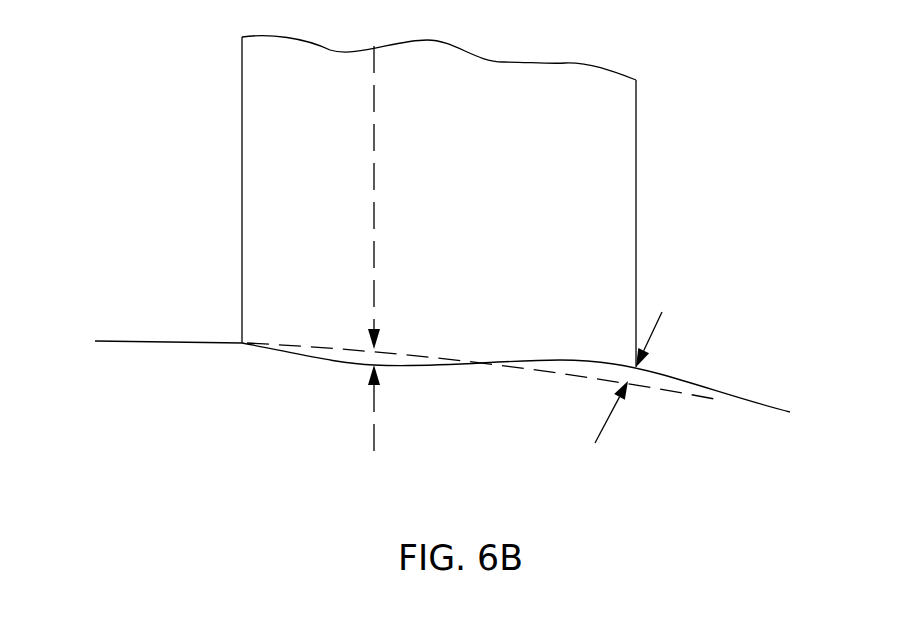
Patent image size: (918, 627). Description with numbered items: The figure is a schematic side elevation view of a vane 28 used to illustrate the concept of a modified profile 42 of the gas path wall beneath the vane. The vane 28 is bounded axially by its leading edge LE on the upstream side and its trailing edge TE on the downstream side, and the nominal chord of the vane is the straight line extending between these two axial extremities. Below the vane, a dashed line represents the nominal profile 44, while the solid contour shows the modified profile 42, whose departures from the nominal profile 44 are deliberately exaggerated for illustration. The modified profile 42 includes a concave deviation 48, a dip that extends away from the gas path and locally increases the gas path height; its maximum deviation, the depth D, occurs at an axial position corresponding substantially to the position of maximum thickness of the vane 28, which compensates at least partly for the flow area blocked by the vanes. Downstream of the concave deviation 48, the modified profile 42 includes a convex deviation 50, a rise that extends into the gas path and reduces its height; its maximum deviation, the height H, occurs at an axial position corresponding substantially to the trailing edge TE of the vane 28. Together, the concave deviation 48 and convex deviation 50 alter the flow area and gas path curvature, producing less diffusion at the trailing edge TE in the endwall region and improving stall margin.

The vane 28 is at (403, 201).
The leading edge LE is at (242, 120).
The trailing edge TE is at (637, 157).
The modified profile 42 is at (405, 368).
The nominal profile 44 is at (407, 352).
The concave deviation 48 is at (313, 386).
The convex deviation 50 is at (688, 355).
The maximum deviation (depth) D is at (358, 249).
The maximum deviation (height) H is at (637, 364).